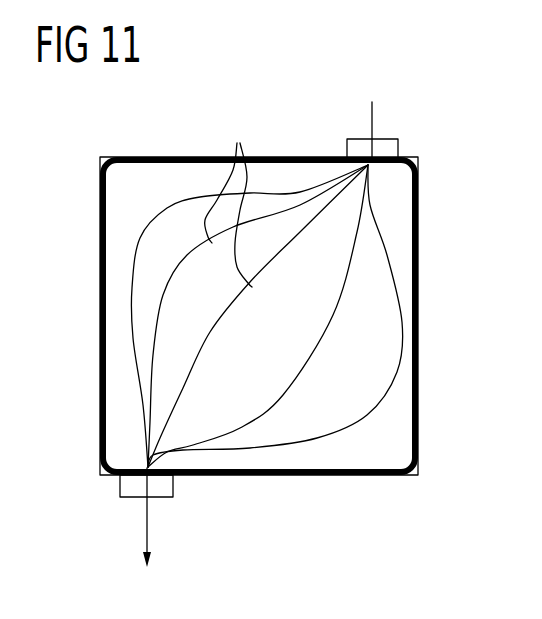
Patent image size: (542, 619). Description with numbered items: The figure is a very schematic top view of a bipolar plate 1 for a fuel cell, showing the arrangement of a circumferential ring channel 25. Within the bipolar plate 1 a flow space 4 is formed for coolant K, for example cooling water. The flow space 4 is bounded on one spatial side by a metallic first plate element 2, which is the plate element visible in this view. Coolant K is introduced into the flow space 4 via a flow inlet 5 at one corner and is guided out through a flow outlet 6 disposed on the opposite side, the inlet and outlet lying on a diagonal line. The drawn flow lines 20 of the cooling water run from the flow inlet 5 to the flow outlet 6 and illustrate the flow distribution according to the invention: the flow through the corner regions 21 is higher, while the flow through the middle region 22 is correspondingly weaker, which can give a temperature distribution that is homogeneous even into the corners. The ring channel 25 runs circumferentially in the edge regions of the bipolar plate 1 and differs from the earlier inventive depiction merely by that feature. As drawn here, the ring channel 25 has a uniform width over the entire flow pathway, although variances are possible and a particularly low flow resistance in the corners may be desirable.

The bipolar plate 1 is at (424, 262).
The first plate element 2 is at (100, 311).
The flow space 4 is at (407, 343).
The flow inlet 5 is at (385, 139).
The flow outlet 6 is at (160, 497).
The flow lines 20 is at (228, 199).
The corner regions 21 is at (147, 200).
The middle region 22 is at (290, 315).
The ring channel 25 is at (175, 158).
The coolant K is at (372, 118).